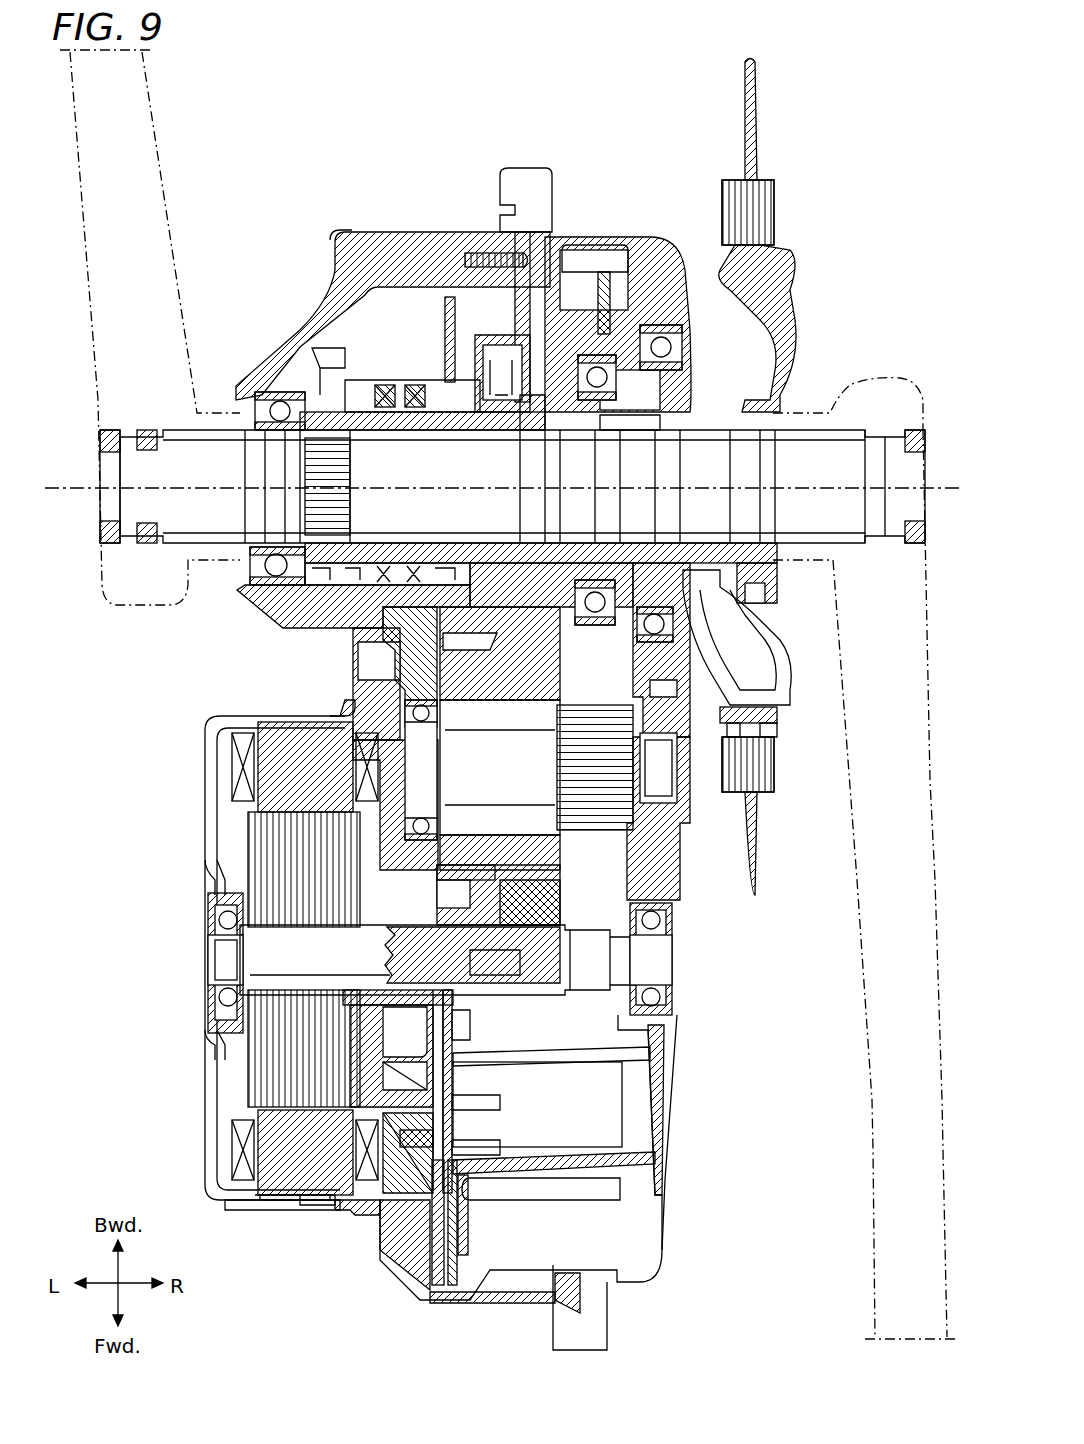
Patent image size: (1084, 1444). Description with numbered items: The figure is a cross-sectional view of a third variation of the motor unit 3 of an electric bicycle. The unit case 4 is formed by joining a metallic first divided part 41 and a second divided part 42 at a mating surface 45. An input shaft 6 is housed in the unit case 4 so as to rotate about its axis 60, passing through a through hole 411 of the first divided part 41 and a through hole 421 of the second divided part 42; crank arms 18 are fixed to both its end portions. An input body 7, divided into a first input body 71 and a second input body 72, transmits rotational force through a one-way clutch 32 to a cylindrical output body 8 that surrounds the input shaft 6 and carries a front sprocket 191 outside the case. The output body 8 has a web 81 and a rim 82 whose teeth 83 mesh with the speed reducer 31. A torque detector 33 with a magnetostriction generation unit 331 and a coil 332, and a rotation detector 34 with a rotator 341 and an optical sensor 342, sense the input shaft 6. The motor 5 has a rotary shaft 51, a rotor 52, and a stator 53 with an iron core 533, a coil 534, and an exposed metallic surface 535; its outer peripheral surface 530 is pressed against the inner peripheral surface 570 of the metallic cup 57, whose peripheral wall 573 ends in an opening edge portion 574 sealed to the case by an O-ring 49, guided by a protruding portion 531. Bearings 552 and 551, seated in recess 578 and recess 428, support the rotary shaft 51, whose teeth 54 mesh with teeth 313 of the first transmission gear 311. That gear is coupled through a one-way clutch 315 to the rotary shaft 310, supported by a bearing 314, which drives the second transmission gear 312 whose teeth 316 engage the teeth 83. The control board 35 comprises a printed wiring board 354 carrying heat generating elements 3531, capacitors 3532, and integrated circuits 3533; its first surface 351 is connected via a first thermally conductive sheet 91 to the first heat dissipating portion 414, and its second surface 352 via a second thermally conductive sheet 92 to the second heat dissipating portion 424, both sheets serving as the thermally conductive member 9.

The motor unit 3 is at (317, 139).
The unit case 4 is at (556, 1181).
The motor 5 is at (248, 938).
The input shaft 6 is at (208, 436).
The input body 7 is at (316, 372).
The output body 8 is at (670, 392).
The thermally conductive member 9 is at (413, 1271).
The crank arm 18 is at (892, 1240).
The speed reducer 31 is at (432, 682).
The one-way clutch 32 is at (632, 430).
The torque detector 33 is at (422, 292).
The rotation detector 34 is at (492, 259).
The control board 35 is at (505, 1091).
The first divided part 41 is at (472, 1303).
The second divided part 42 is at (662, 1092).
The mating surface 45 is at (552, 1315).
The O-ring 49 is at (338, 708).
The rotary shaft 51 is at (250, 965).
The rotor 52 is at (295, 1040).
The stator 53 is at (254, 958).
The teeth 54 is at (478, 1027).
The metallic cup 57 is at (206, 1176).
The axis 60 is at (66, 486).
The first input body 71 is at (277, 397).
The second input body 72 is at (539, 442).
The web 81 is at (627, 299).
The rim 82 is at (606, 298).
The teeth 83 is at (580, 262).
The first thermally conductive sheet 91 is at (430, 1265).
The second thermally conductive sheet 92 is at (447, 1285).
The front sprocket 191 is at (780, 264).
The rotary shaft 310 is at (385, 703).
The first transmission gear 311 is at (522, 897).
The second transmission gear 312 is at (598, 822).
The teeth 313 is at (493, 980).
The bearing 314 is at (678, 788).
The one-way clutch 315 is at (532, 900).
The teeth 316 is at (668, 700).
The magnetostriction generation unit 331 is at (408, 392).
The coil 332 is at (383, 392).
The rotator 341 is at (516, 300).
The optical sensor 342 is at (478, 345).
The first surface 351 is at (462, 1105).
The second surface 352 is at (462, 1150).
The printed wiring board 354 is at (460, 1040).
The through hole 411 is at (240, 583).
The first heat dissipating portion 414 is at (385, 1252).
The through hole 421 is at (728, 606).
The second heat dissipating portion 424 is at (492, 1190).
The recess 428 is at (668, 935).
The outer peripheral surface 530 is at (265, 1212).
The portion 531 is at (422, 1148).
The iron core 533 is at (275, 1142).
The coil 534 is at (238, 1132).
The metallic surface 535 is at (325, 1222).
The bearing 551 is at (665, 1008).
The bearing 552 is at (210, 898).
The inner peripheral surface 570 is at (242, 1210).
The peripheral wall 573 is at (285, 1212).
The opening edge portion 574 is at (340, 1215).
The recess 578 is at (216, 938).
The heat generating element 3531 is at (478, 1245).
The capacitor 3532 is at (580, 1114).
The integrated circuit 3533 is at (652, 1053).